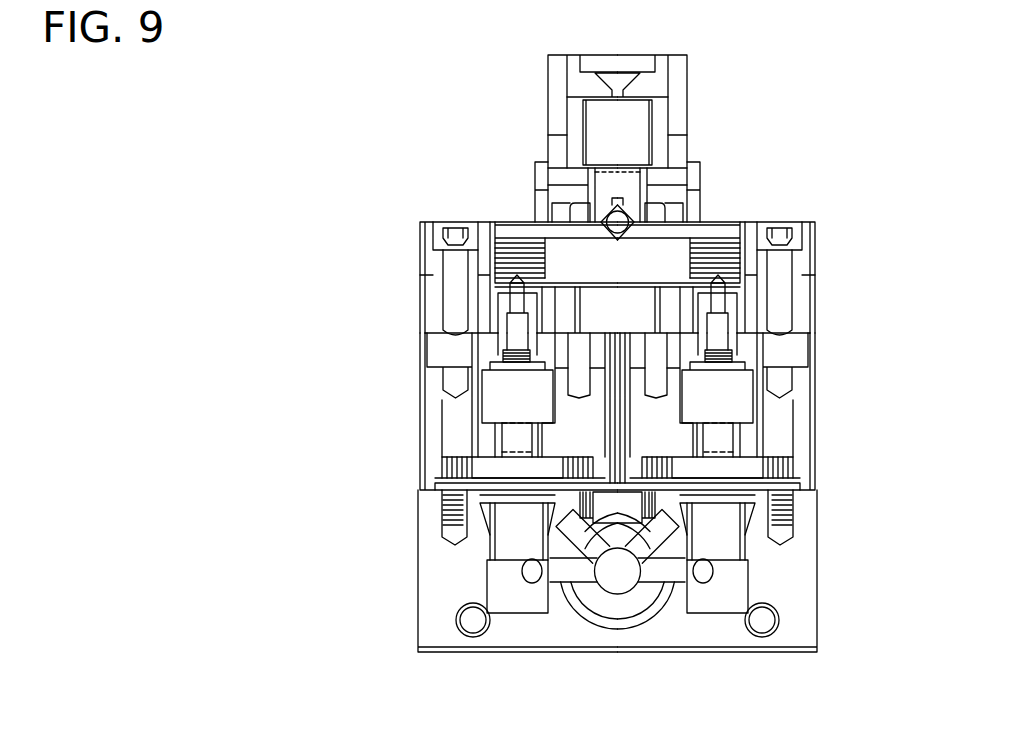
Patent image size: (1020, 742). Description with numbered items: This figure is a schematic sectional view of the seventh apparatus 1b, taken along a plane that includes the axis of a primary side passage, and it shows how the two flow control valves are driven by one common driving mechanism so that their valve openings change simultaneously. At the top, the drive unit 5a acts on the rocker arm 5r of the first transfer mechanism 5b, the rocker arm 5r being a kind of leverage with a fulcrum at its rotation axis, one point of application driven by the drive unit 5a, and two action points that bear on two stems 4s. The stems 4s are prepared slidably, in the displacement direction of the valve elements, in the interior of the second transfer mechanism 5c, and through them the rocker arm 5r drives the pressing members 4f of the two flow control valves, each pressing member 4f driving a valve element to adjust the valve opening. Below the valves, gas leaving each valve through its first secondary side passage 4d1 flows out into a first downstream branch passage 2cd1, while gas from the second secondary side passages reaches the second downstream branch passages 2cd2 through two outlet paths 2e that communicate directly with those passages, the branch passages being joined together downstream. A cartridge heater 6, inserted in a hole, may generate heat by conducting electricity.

The seventh apparatus 1b is at (406, 104).
The drive unit 5a is at (686, 97).
The rocker arm 5r is at (645, 258).
The first transfer mechanism 5b is at (813, 273).
The second transfer mechanism 5c is at (813, 414).
The stem 4s is at (517, 387).
The pressing member 4f is at (490, 472).
The first secondary side passage 4d1 is at (515, 528).
The cartridge heater 6 is at (473, 622).
The outlet path 2e is at (572, 527).
The first downstream branch passage 2cd1 is at (572, 573).
The second downstream branch passage 2cd2 is at (618, 571).